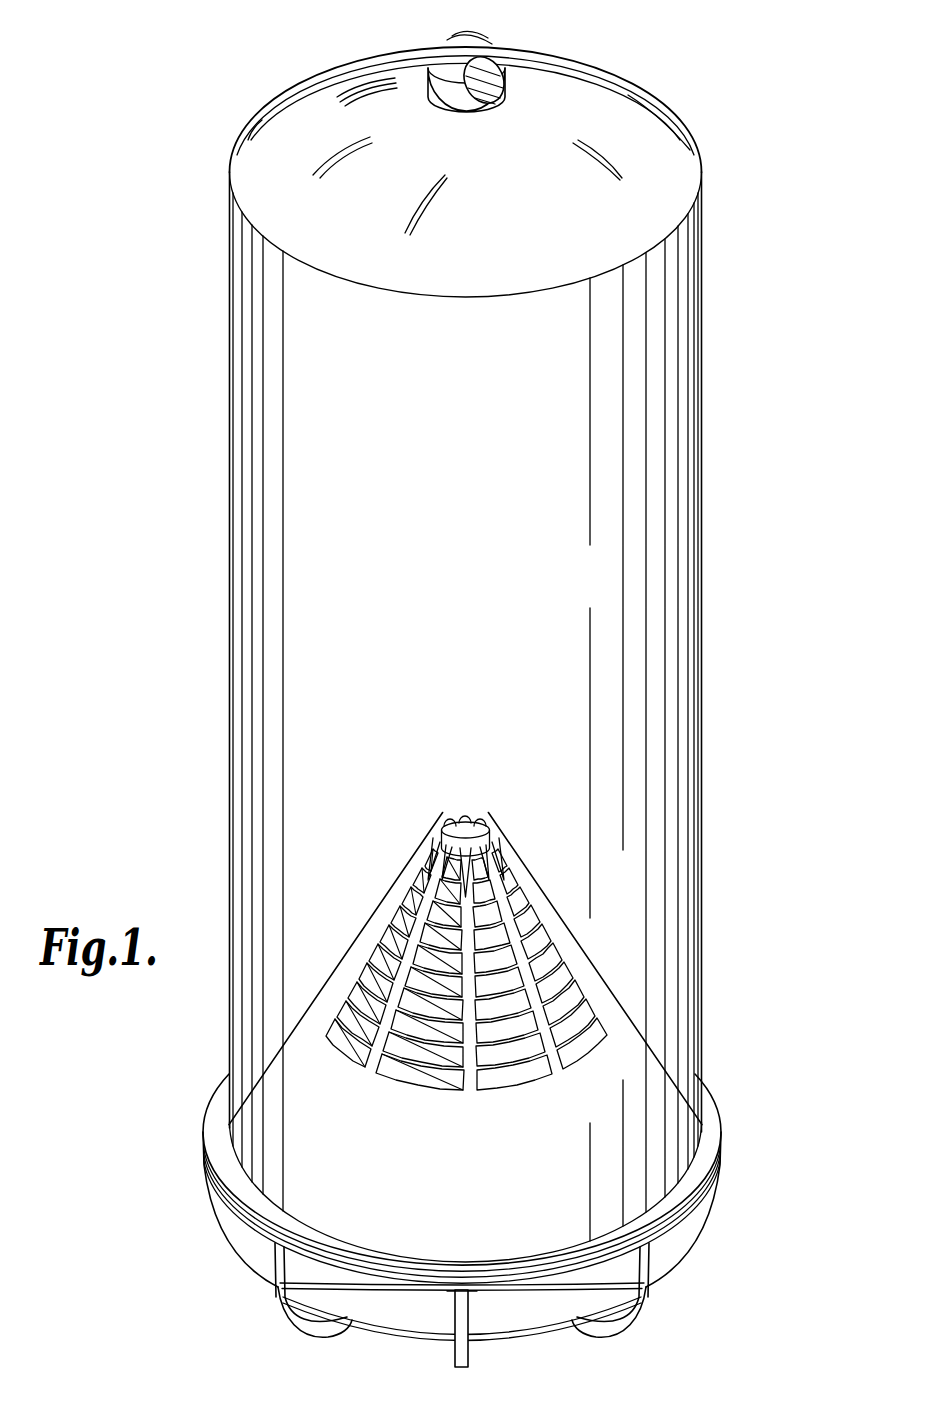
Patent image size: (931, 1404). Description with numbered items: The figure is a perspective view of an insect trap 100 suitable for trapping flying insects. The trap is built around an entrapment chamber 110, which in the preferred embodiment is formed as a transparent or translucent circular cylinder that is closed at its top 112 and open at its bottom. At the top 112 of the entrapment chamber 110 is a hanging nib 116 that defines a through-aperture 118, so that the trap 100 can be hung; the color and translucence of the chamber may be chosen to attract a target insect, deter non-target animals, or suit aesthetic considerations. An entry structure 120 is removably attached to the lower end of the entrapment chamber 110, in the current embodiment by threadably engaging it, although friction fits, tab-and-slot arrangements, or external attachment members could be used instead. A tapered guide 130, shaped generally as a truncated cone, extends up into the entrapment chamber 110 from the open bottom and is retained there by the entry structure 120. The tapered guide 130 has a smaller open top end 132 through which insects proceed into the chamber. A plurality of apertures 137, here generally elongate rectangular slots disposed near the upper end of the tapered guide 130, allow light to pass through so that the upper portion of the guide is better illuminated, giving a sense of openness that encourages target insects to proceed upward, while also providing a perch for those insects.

The insect trap 100 is at (190, 122).
The entrapment chamber 110 is at (683, 495).
The top 112 is at (303, 102).
The hanging nib 116 is at (452, 56).
The through-aperture 118 is at (492, 65).
The entry structure 120 is at (690, 1230).
The tapered guide 130 is at (463, 953).
The smaller open top end 132 is at (460, 830).
The apertures 137 is at (390, 915).